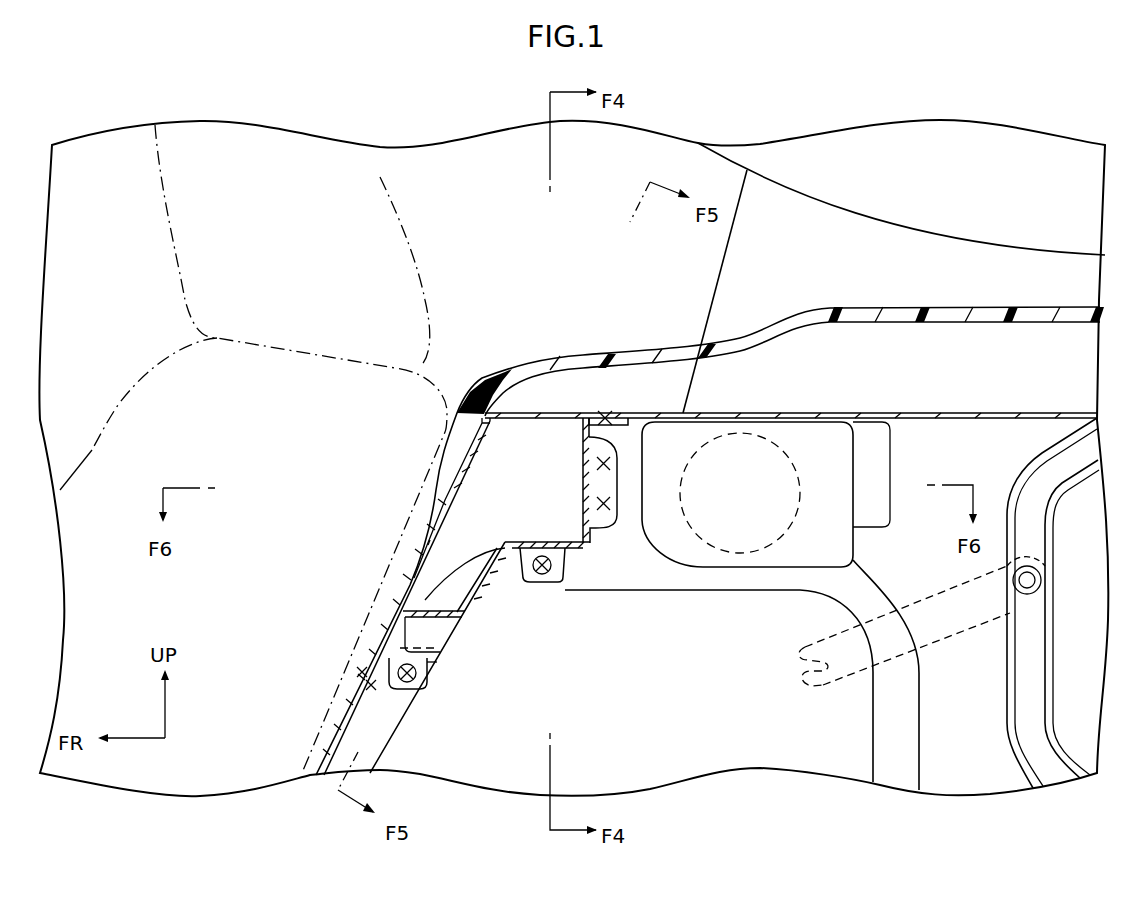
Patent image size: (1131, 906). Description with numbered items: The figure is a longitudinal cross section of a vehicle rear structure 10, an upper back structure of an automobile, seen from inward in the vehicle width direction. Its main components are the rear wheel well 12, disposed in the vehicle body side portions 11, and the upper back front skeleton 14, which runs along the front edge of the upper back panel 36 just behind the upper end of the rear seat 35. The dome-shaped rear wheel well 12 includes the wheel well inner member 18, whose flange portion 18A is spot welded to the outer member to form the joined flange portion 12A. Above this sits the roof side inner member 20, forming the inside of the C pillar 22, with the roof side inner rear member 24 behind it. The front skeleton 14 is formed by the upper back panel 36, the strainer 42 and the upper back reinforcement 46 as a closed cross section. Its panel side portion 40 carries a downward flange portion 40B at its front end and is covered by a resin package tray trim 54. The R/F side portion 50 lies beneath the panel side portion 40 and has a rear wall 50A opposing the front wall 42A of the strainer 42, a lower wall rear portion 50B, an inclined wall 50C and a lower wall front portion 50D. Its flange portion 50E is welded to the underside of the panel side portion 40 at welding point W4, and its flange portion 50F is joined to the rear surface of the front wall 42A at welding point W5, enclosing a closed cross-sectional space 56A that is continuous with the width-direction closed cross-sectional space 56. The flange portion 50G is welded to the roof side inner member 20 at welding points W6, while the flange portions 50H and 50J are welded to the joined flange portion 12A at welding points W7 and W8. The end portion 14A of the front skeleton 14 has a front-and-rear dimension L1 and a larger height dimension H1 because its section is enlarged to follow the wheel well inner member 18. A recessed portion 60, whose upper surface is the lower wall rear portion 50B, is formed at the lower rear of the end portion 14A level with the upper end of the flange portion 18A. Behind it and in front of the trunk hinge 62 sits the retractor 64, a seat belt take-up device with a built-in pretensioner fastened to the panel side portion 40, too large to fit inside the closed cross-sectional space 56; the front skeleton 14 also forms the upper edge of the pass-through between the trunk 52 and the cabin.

The vehicle rear structure 10 is at (503, 185).
The vehicle body side portion 11 is at (848, 178).
The rear wheel well 12 is at (904, 657).
The joined flange portion 12A is at (920, 682).
The upper back front skeleton 14 is at (524, 348).
The vehicle width direction end portion 14A is at (549, 396).
The wheel well inner member 18 is at (742, 714).
The flange portion 18A is at (708, 580).
The roof side inner member 20 is at (708, 145).
The C pillar 22 is at (894, 162).
The roof side inner rear member 24 is at (990, 250).
The rear seat 35 is at (92, 447).
The upper back panel 36 is at (698, 456).
The panel side portion 40 is at (934, 411).
The flange portion 40B is at (455, 440).
The strainer 42 is at (327, 735).
The front wall 42A is at (428, 542).
The upper back reinforcement 46 is at (550, 538).
The R/F side portion 50 is at (550, 538).
The rear wall 50A is at (578, 460).
The lower wall rear portion 50B is at (560, 540).
The inclined wall 50C is at (466, 598).
The lower wall front portion 50D is at (415, 622).
The flange portion 50E is at (622, 418).
The flange portion 50F is at (405, 692).
The flange portion 50G is at (618, 458).
The flange portion 50H is at (565, 568).
The flange portion 50J is at (469, 685).
The trunk 52 is at (731, 724).
The package tray trim 54 is at (842, 305).
The closed cross-sectional space 56 is at (118, 255).
The closed cross-sectional space 56A is at (477, 400).
The recessed portion 60 is at (462, 620).
The trunk hinge 62 is at (1052, 668).
The retractor 64 is at (854, 547).
The welding point W4 is at (608, 410).
The welding point W5 is at (355, 678).
The welding points W6 is at (612, 504).
The welding point W7 is at (552, 572).
The welding point W8 is at (412, 692).
The vehicle height dimension H1 is at (380, 657).
The vehicle front and rear direction dimension L1 is at (588, 287).